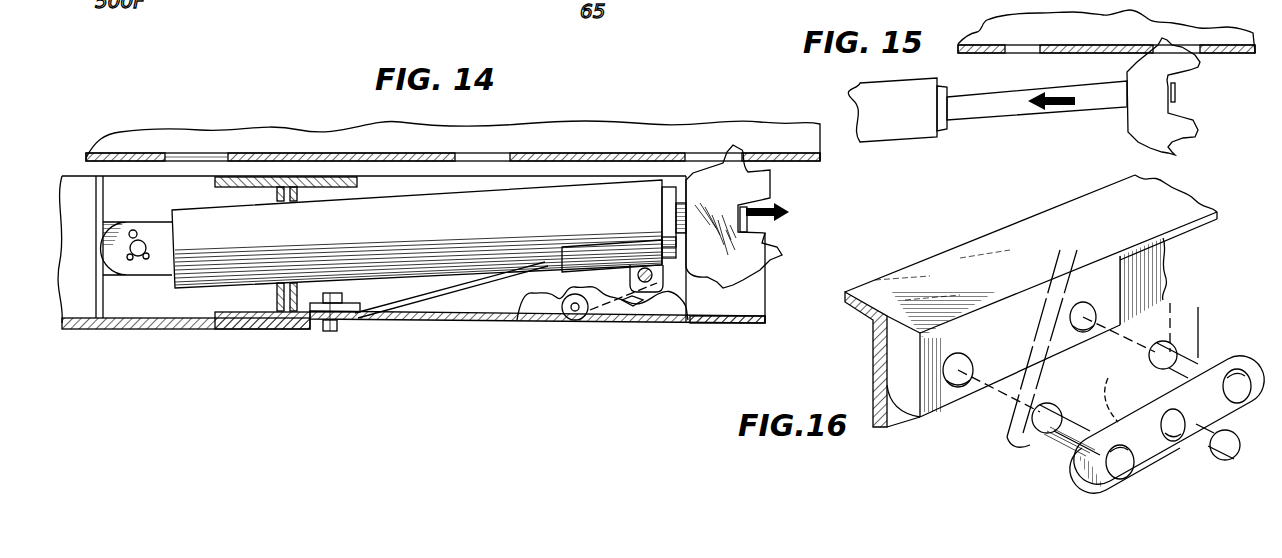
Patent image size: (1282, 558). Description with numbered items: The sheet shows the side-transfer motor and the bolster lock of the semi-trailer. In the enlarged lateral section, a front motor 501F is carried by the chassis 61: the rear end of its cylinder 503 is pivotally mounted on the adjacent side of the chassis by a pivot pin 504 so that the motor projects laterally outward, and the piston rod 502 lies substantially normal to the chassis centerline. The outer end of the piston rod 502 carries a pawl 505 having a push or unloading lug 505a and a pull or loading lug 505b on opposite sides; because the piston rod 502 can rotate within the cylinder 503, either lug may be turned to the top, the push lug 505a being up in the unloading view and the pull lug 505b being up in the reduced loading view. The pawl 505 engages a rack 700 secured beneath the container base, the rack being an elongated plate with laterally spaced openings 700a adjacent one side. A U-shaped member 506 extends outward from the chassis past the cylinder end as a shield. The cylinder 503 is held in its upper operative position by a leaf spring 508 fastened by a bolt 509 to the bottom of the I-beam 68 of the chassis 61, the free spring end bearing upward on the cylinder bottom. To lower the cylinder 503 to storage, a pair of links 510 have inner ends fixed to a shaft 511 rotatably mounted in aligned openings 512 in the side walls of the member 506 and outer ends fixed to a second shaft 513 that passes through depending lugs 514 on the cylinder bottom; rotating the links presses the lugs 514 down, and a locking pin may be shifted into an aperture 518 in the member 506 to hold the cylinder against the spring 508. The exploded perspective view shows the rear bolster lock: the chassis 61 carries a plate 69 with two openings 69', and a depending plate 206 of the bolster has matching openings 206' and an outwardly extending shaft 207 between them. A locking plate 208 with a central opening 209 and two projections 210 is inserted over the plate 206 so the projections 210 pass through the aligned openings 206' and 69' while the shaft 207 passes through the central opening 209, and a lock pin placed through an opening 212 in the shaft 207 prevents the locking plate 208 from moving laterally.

In FIG. 14, the chassis 61 is at (153, 328).
In FIG. 14, the I-beam 68 is at (228, 330).
In FIG. 16, the I-beam 68 is at (896, 276).
In FIG. 16, the plate 69 is at (934, 430).
In FIG. 16, the openings 69' is at (1026, 328).
In FIG. 16, the downwardly depending plate 206 is at (1035, 344).
In FIG. 16, the openings 206' is at (1090, 372).
In FIG. 16, the outwardly extending shaft 207 is at (1205, 450).
In FIG. 16, the locking plate 208 is at (1110, 422).
In FIG. 16, the central opening 209 is at (1170, 437).
In FIG. 16, the projections 210 is at (1192, 357).
In FIG. 16, the opening 212 is at (1204, 418).
In FIG. 14, the front motor 501F is at (379, 280).
In FIG. 14, the piston rod 502 is at (769, 201).
In FIG. 15, the piston rod 502 is at (992, 110).
In FIG. 14, the cylinder 503 is at (400, 205).
In FIG. 15, the cylinder 503 is at (902, 128).
In FIG. 14, the pivot pin 504 is at (128, 240).
In FIG. 14, the pawl 505 is at (738, 197).
In FIG. 15, the pawl 505 is at (1162, 75).
In FIG. 14, the push lug 505a is at (730, 150).
In FIG. 15, the push lug 505a is at (1176, 154).
In FIG. 14, the pull lug 505b is at (760, 283).
In FIG. 15, the pull lug 505b is at (1166, 46).
In FIG. 14, the U-shaped member 506 is at (738, 325).
In FIG. 14, the leaf spring 508 is at (451, 290).
In FIG. 14, the bolt 509 is at (326, 332).
In FIG. 14, the link 510 is at (618, 290).
In FIG. 14, the shaft 511 is at (575, 320).
In FIG. 14, the aligned openings 512 is at (562, 318).
In FIG. 14, the second shaft 513 is at (635, 304).
In FIG. 14, the lugs 514 is at (660, 282).
In FIG. 14, the aperture 518 is at (632, 308).
In FIG. 14, the rack 700 is at (298, 150).
In FIG. 15, the rack 700 is at (972, 45).
In FIG. 14, the openings 700a is at (505, 156).
In FIG. 15, the openings 700a is at (1040, 49).